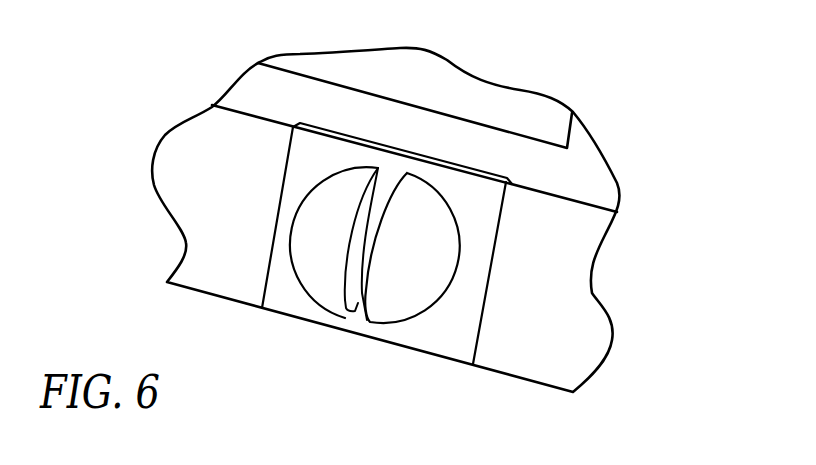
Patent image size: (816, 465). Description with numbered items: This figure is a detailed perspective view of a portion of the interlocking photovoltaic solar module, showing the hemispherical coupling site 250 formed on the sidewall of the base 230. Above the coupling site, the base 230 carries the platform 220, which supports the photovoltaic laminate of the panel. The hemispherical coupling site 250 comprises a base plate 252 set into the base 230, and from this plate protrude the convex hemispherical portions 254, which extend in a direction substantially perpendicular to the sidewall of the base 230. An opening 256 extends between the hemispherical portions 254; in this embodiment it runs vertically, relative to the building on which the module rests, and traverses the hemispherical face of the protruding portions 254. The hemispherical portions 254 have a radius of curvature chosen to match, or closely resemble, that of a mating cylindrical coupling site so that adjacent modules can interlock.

The platform 220 is at (490, 102).
The base 230 is at (557, 255).
The hemispherical coupling site 250 is at (411, 370).
The base plate 252 is at (308, 167).
The hemispherical portions 254 is at (397, 305).
The opening 256 is at (382, 193).